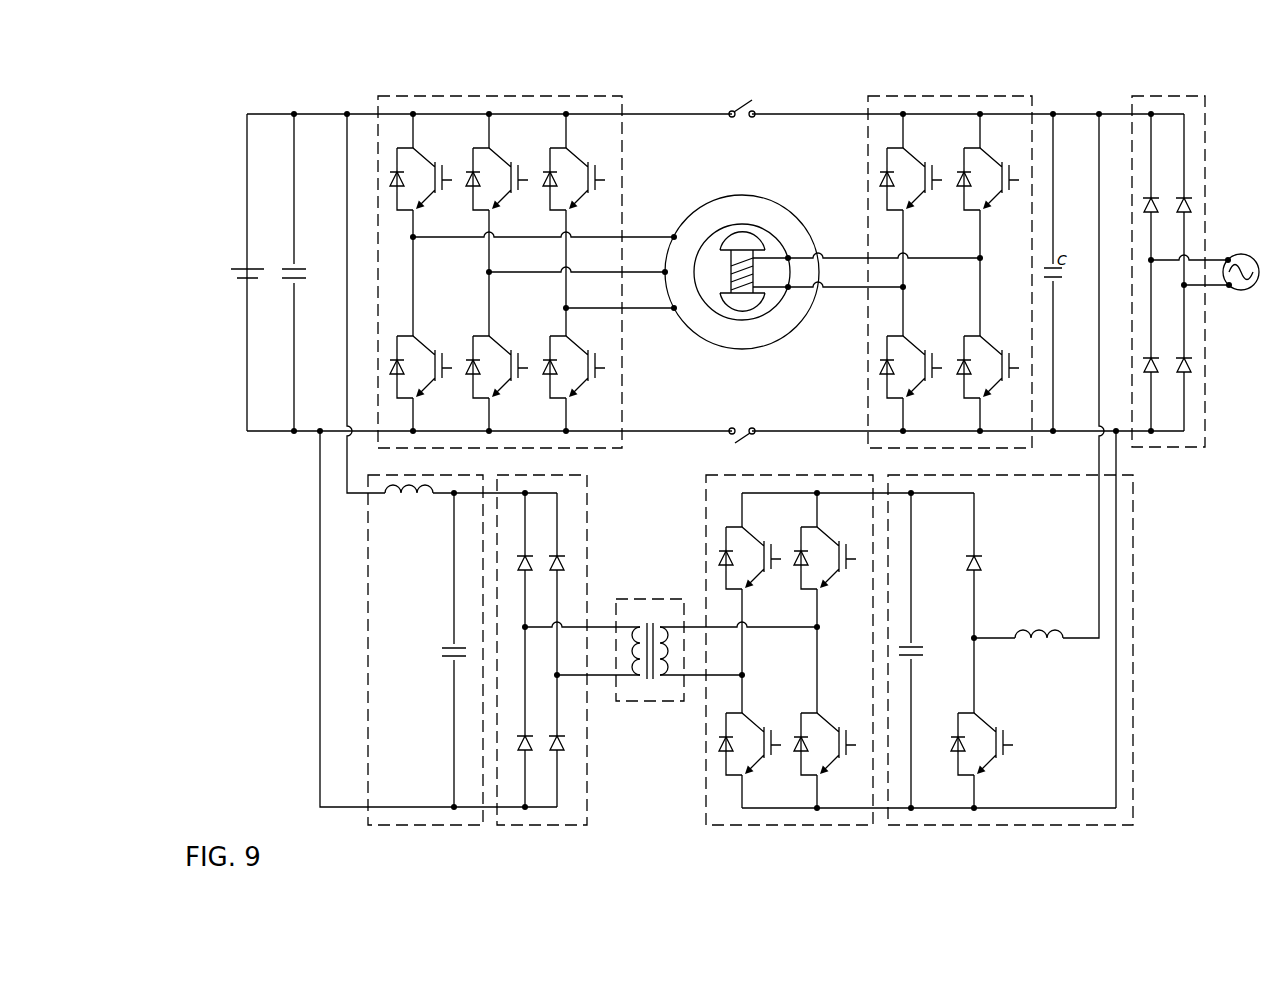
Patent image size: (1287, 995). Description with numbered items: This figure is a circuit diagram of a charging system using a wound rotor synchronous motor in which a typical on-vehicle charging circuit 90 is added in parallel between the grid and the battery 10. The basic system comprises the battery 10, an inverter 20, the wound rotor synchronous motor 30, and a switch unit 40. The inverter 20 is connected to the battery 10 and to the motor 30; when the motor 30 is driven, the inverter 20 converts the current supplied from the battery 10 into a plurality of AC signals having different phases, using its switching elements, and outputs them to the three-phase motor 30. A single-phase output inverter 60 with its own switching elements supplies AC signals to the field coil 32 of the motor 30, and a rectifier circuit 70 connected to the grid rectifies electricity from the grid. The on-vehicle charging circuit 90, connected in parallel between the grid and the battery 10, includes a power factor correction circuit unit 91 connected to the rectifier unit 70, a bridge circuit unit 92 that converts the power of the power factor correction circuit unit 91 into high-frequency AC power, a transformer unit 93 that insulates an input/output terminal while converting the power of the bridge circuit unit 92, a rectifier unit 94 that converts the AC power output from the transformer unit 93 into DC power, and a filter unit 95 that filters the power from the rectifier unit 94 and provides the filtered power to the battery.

The battery 10 is at (241, 268).
The inverter 20 is at (522, 96).
The wound rotor synchronous motor 30 is at (708, 190).
The field coil 32 is at (740, 252).
The switch unit 40 is at (741, 100).
The single-phase output inverter 60 is at (949, 96).
The rectifier circuit 70 is at (1167, 96).
The on-vehicle charging circuit 90 is at (1150, 673).
The power factor correction circuit unit 91 is at (1135, 757).
The bridge circuit unit 92 is at (706, 790).
The transformer unit 93 is at (650, 599).
The rectifier unit 94 is at (587, 727).
The filter unit 95 is at (368, 652).